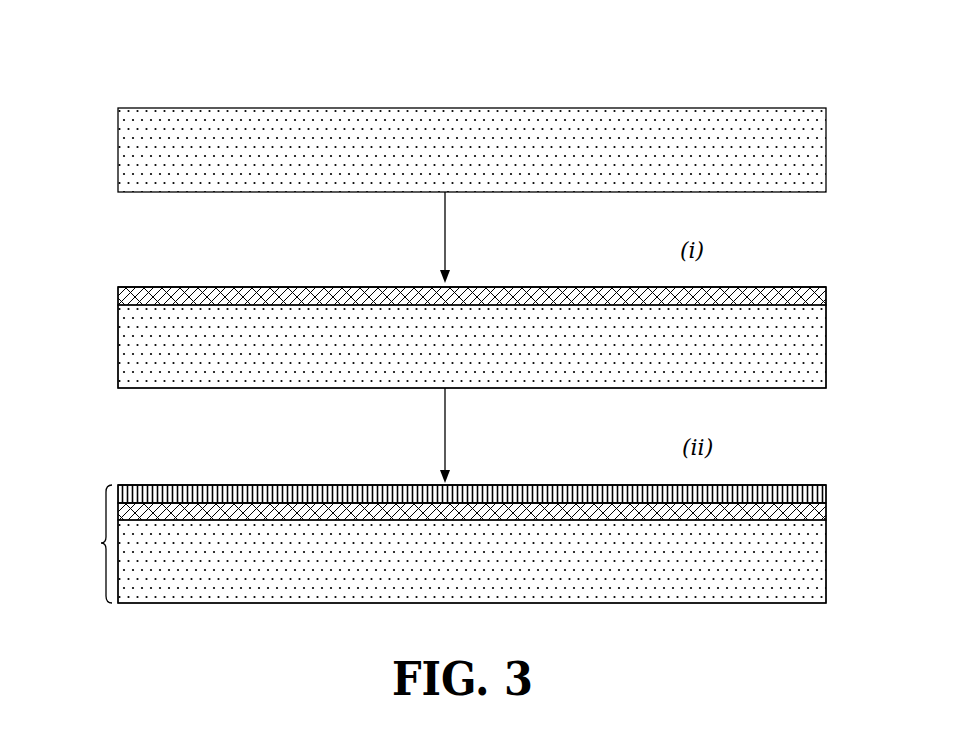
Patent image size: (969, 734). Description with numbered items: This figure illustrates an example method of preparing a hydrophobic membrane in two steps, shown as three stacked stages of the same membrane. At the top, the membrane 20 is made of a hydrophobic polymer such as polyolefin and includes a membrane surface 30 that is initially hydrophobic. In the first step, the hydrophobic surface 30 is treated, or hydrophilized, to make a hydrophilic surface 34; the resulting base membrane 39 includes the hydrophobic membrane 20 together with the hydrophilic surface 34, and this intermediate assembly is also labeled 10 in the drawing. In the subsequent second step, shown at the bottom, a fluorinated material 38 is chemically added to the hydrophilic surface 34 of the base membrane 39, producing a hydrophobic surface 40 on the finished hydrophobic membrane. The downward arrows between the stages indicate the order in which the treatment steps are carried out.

The coated substrate assembly 10 is at (118, 250).
The membrane 20 is at (838, 149).
The membrane surface 30 is at (251, 104).
The hydrophilic surface 34 is at (256, 276).
The fluorinated material 38 is at (838, 489).
The base membrane 39 is at (113, 408).
The hydrophobic surface 40 is at (265, 470).